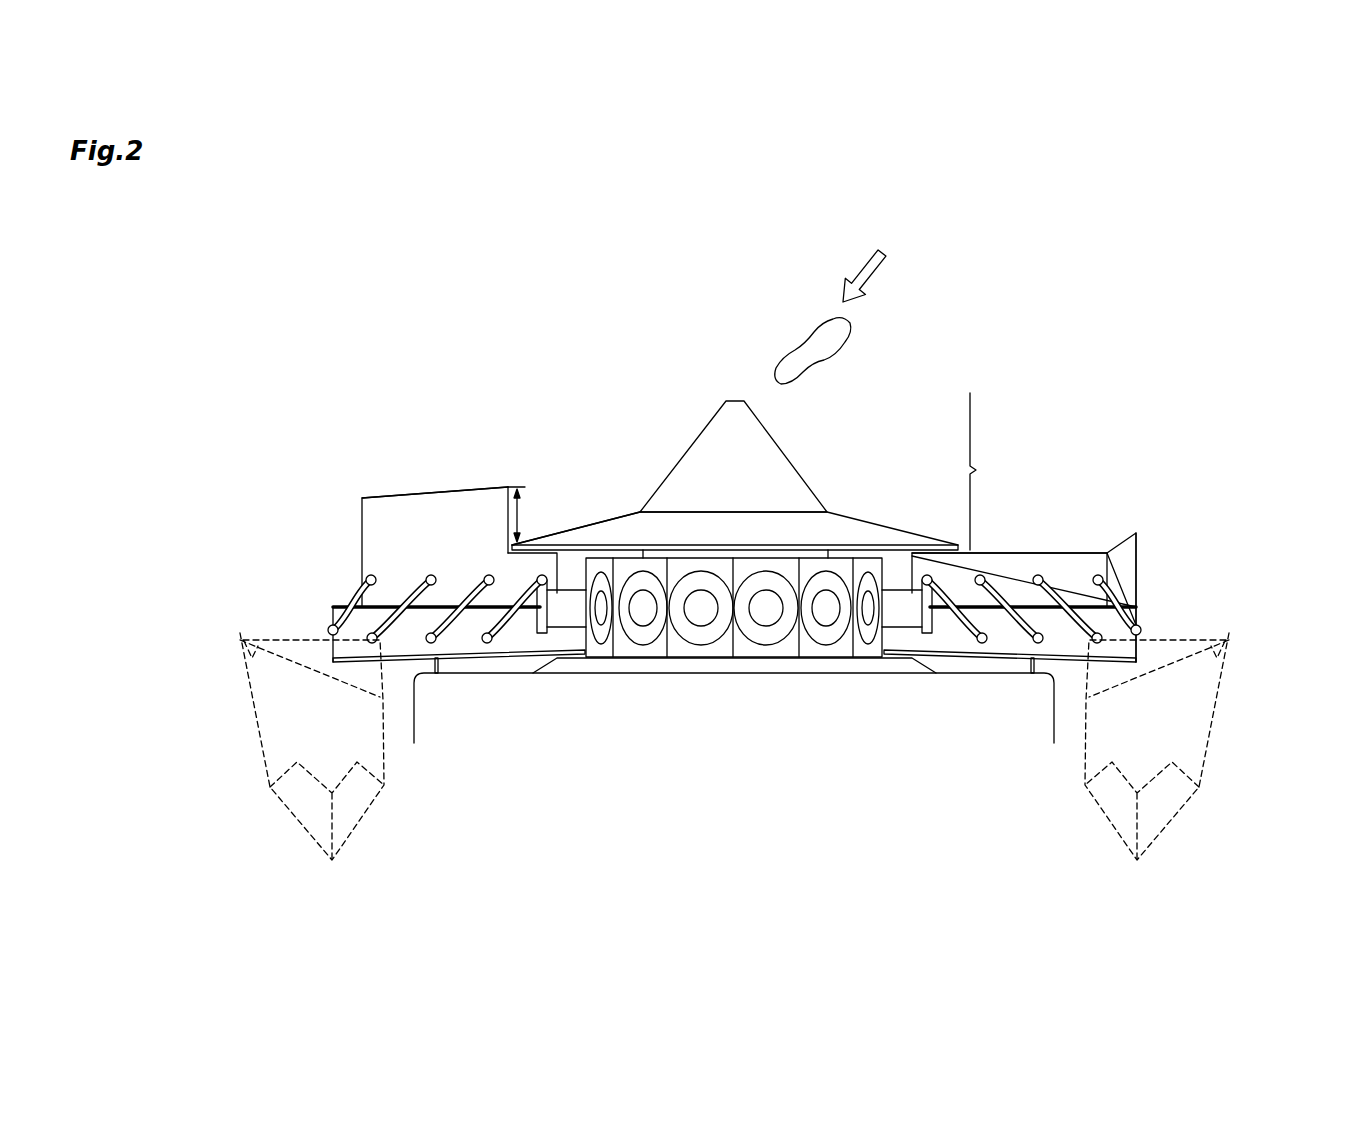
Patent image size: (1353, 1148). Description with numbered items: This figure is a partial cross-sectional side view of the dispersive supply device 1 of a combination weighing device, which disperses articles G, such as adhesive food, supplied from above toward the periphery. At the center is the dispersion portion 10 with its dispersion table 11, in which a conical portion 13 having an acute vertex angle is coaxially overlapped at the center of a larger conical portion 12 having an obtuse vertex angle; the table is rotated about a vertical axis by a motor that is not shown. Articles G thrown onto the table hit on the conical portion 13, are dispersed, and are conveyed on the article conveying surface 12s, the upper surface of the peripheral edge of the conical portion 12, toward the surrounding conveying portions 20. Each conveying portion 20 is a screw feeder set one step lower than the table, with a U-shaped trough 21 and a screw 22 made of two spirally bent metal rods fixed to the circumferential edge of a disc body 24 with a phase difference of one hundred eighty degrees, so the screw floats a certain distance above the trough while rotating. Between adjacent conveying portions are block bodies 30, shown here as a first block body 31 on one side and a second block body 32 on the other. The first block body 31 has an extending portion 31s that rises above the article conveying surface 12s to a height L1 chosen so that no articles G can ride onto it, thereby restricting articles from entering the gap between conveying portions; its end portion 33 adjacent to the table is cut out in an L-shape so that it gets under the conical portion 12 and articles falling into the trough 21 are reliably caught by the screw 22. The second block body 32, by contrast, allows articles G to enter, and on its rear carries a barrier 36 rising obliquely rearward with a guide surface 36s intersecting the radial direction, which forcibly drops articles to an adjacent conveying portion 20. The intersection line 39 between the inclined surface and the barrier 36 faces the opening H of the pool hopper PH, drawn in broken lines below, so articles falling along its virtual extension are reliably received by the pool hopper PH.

The dispersive supply device 1 is at (1062, 267).
The dispersion portion 10 is at (677, 419).
The dispersion table 11 is at (994, 471).
The conical portion 12 is at (850, 528).
The article conveying surface 12s is at (522, 543).
The conical portion 13 is at (765, 462).
The conveying portion 20 is at (186, 565).
The trough 21 is at (330, 636).
The screw 22 is at (328, 620).
The disc body 24 is at (540, 636).
The block body 30 is at (331, 466).
The first block body 31 is at (398, 513).
The extending portion 31s is at (440, 525).
The second block body 32 is at (1037, 563).
The end portion 33 is at (488, 508).
The barrier 36 is at (1138, 548).
The guide surface 36s is at (1110, 553).
The intersection line 39 is at (1120, 586).
The articles G is at (850, 324).
The opening H is at (240, 633).
The pool hopper PH is at (372, 742).
The height L1 is at (519, 517).